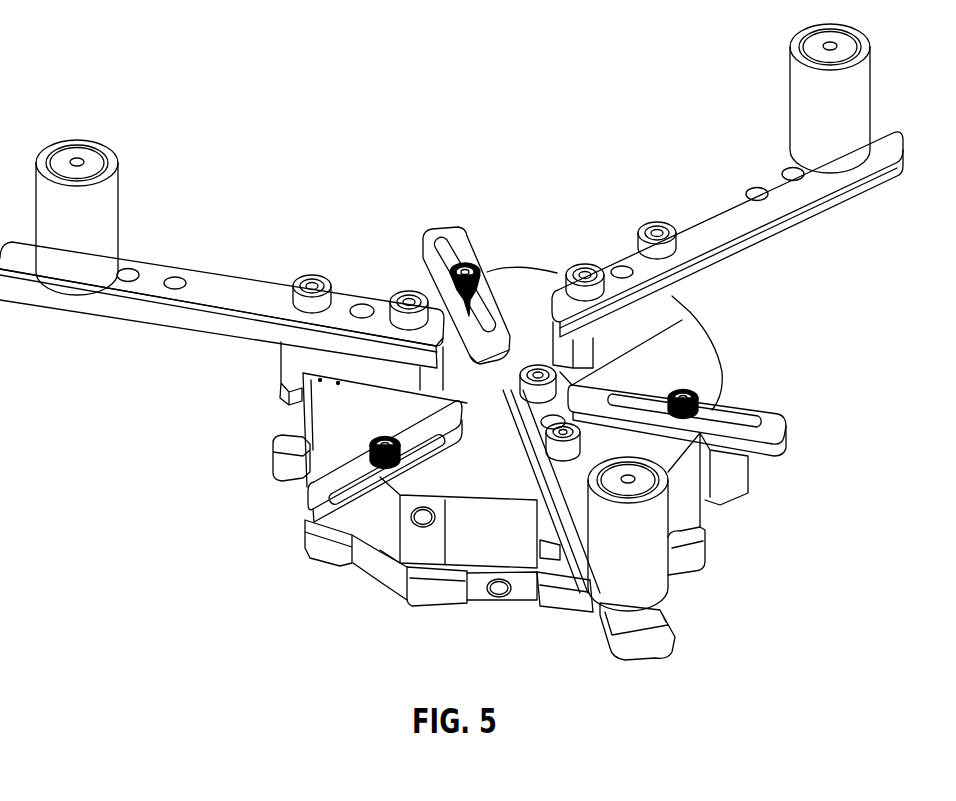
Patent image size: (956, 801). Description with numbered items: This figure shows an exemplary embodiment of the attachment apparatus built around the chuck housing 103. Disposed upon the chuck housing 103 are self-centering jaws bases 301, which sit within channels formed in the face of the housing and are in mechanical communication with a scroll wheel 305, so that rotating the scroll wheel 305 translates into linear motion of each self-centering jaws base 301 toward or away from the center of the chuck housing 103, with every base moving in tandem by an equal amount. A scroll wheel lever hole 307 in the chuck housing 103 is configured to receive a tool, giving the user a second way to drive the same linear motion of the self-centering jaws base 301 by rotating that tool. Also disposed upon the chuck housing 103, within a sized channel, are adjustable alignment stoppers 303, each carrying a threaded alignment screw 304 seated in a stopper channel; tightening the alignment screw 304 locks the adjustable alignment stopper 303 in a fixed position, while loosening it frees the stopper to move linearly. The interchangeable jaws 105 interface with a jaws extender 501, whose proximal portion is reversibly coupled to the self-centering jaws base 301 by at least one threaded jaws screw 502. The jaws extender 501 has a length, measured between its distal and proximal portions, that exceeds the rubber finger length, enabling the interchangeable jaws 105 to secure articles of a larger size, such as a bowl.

The chuck housing 103 is at (510, 469).
The interchangeable jaws 105 is at (74, 245).
The self-centering jaws base 301 is at (688, 303).
The adjustable alignment stopper 303 is at (763, 410).
The alignment screw 304 is at (384, 438).
The scroll wheel 305 is at (378, 578).
The scroll wheel lever hole 307 is at (498, 601).
The jaws extender 501 is at (188, 329).
The jaws screw 502 is at (658, 221).